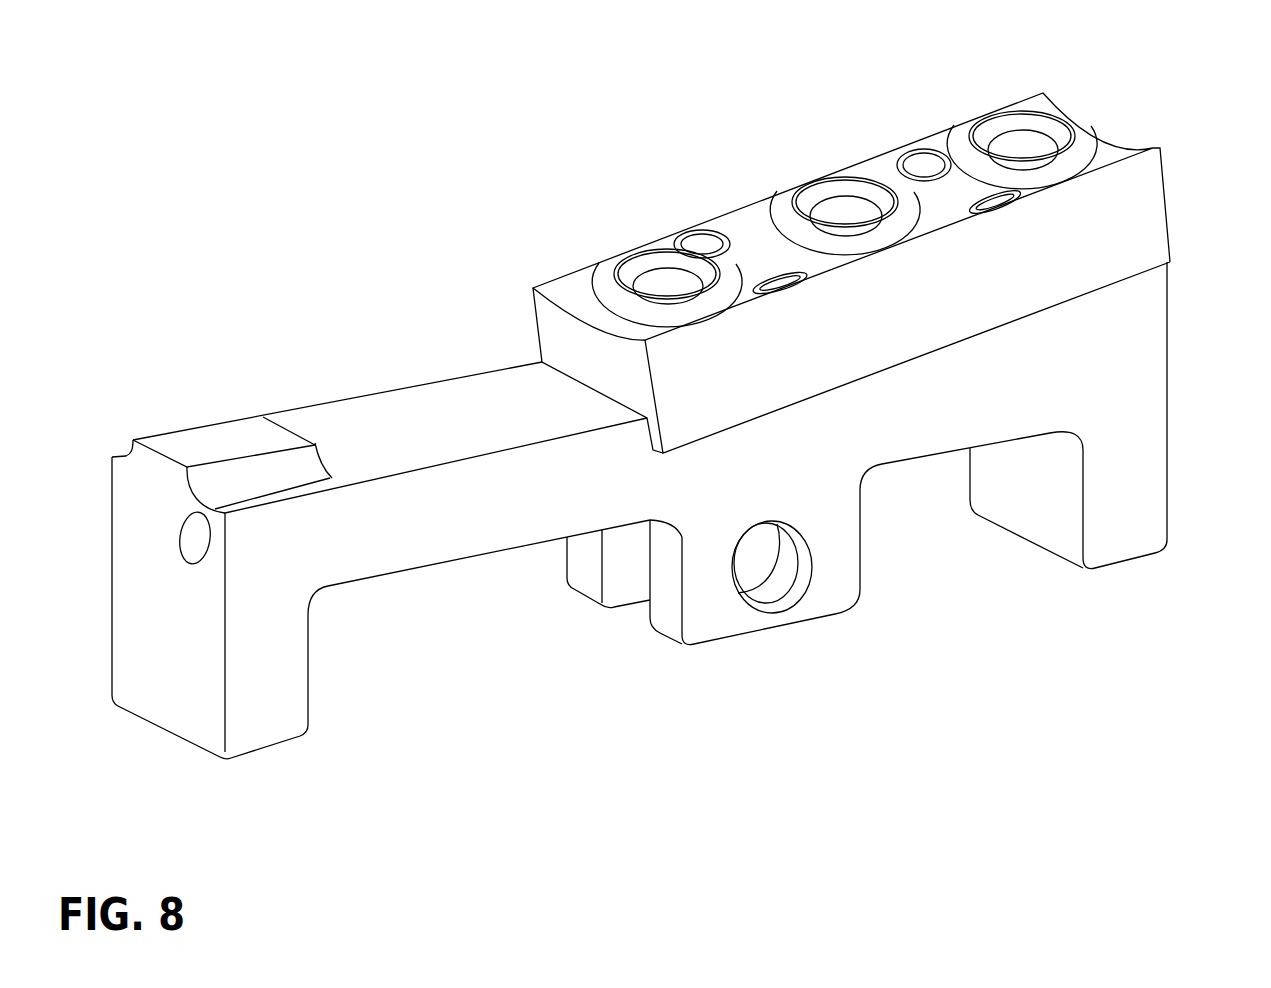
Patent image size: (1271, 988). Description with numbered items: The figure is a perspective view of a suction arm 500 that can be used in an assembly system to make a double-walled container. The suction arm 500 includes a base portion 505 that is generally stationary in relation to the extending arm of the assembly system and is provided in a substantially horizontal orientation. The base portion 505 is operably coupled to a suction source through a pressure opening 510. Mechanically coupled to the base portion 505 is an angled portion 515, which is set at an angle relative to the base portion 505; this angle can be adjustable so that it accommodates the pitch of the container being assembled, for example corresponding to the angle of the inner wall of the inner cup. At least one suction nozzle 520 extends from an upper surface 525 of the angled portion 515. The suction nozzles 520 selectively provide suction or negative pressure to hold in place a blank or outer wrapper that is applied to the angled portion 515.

The suction arm 500 is at (1188, 362).
The base portion 505 is at (780, 630).
The pressure opening 510 is at (170, 525).
The angled portion 515 is at (557, 280).
The suction nozzle 520 is at (835, 193).
The upper surface 525 is at (865, 147).